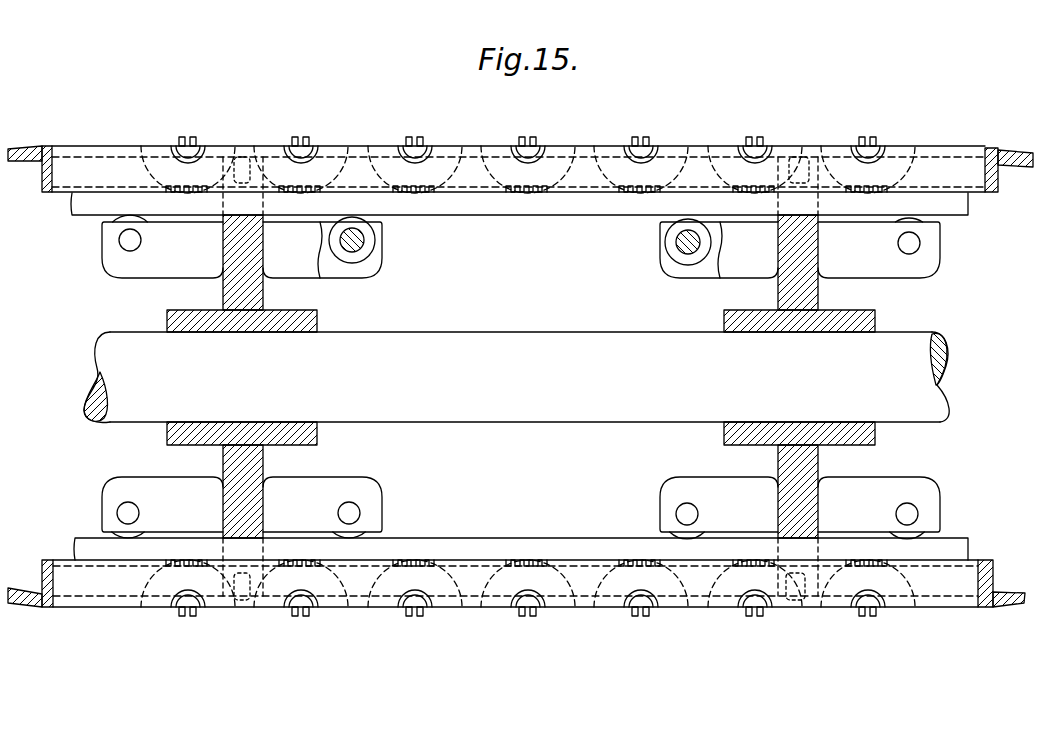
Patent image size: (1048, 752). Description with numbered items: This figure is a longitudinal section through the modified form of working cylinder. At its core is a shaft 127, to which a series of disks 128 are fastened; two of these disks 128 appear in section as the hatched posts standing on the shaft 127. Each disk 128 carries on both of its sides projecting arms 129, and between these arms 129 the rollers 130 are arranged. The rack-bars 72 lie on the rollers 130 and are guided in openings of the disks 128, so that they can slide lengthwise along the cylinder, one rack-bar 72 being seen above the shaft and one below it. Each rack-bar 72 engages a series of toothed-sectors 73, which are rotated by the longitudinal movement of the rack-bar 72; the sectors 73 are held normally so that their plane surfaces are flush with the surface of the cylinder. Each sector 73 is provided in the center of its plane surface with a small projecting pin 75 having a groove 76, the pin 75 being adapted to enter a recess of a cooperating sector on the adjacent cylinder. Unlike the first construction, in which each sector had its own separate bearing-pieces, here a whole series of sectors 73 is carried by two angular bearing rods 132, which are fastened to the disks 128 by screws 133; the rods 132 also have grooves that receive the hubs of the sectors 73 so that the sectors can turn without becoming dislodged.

The rack-bar 72 is at (968, 197).
The toothed-sector 73 is at (720, 146).
The projecting pin 75 is at (880, 142).
The groove 76 is at (869, 137).
The shaft 127 is at (945, 388).
The disk 128 is at (812, 250).
The projecting arm 129 is at (367, 270).
The roller 130 is at (367, 245).
The angular bearing rod 132 is at (985, 107).
The screw 133 is at (815, 146).